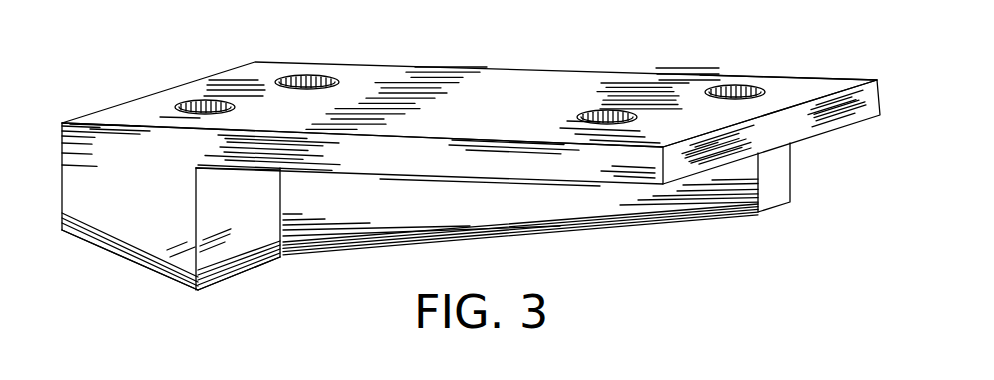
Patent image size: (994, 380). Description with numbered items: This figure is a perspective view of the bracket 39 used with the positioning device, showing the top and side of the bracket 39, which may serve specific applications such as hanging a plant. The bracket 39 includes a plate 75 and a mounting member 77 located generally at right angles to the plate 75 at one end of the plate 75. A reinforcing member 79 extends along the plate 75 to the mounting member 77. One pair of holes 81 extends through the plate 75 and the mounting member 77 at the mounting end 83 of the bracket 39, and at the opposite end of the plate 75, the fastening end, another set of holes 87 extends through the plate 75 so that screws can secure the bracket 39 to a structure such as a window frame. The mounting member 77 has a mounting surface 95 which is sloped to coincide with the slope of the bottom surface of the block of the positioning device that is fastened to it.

The bracket 39 is at (777, 78).
The plate 75 is at (468, 80).
The mounting member 77 is at (103, 252).
The reinforcing member 79 is at (714, 215).
The holes 81 is at (202, 99).
The mounting end 83 is at (62, 173).
The holes 87 is at (612, 117).
The mounting surface 95 is at (173, 280).